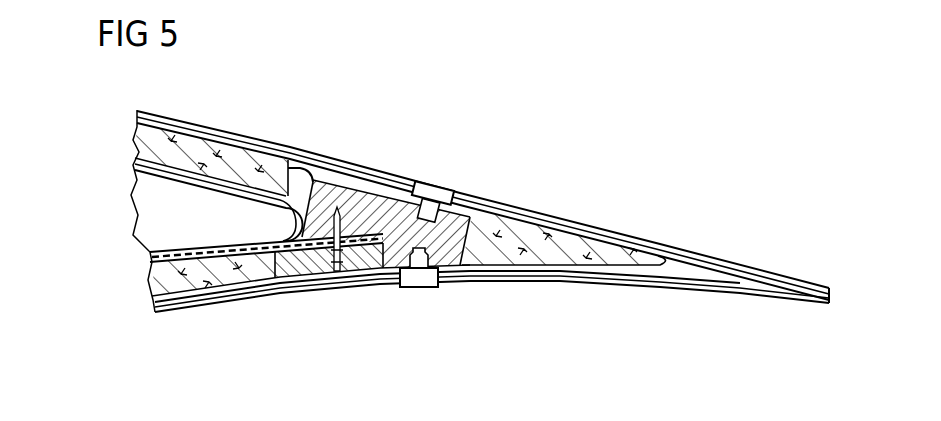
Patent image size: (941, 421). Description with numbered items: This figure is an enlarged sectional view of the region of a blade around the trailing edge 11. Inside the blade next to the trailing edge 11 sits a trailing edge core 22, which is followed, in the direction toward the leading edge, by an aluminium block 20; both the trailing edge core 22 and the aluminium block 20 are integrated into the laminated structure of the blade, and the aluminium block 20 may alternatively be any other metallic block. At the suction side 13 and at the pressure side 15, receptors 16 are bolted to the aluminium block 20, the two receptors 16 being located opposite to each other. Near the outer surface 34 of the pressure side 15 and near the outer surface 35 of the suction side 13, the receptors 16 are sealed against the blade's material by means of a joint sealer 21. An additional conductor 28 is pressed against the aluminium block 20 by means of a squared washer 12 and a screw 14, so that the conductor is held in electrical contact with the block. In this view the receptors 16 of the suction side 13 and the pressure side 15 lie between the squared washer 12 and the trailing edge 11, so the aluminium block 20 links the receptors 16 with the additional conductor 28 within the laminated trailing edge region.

The trailing edge 11 is at (830, 296).
The squared washer 12 is at (311, 273).
The suction side 13 is at (178, 121).
The screw 14 is at (342, 273).
The pressure side 15 is at (182, 309).
The receptors 16 is at (427, 186).
The aluminium block 20 is at (370, 187).
The joint sealer 21 is at (455, 192).
The trailing edge core 22 is at (598, 268).
The additional conductor 28 is at (150, 254).
The outer surface of the pressure side 34 is at (553, 283).
The outer surface of the suction side 35 is at (250, 133).